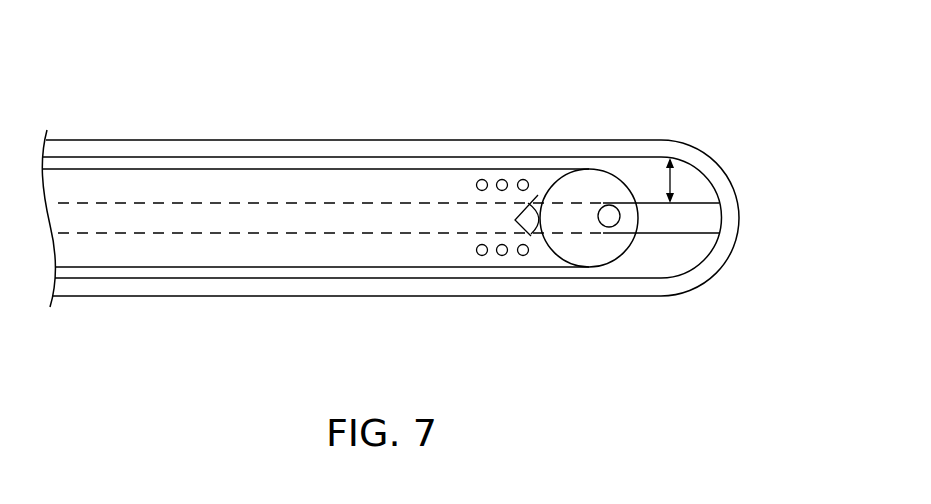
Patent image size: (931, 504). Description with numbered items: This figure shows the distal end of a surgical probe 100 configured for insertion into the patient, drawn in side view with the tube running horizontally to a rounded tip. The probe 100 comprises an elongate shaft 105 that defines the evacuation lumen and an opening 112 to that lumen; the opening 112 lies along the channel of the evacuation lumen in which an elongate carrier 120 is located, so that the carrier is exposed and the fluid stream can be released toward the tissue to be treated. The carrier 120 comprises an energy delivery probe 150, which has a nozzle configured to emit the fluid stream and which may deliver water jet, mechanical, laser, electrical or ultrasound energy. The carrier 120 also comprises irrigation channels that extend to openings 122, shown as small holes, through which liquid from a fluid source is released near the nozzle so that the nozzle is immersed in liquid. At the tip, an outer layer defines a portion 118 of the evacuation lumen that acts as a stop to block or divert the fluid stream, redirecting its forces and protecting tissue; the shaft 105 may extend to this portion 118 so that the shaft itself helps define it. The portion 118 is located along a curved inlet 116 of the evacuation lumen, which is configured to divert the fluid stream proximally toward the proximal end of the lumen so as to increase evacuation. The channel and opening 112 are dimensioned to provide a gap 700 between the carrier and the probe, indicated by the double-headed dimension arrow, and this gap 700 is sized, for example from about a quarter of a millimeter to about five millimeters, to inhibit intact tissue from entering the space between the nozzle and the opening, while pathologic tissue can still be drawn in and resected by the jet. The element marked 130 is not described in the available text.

The surgical probe 100 is at (327, 57).
The elongate shaft 105 is at (397, 140).
The opening 112 is at (697, 166).
The curved inlet 116 is at (697, 185).
The portion of the evacuation lumen 118 is at (705, 195).
The elongate carrier 120 is at (315, 248).
The openings 122 is at (475, 250).
The reflector element 130 is at (533, 238).
The energy delivery probe 150 is at (617, 220).
The gap 700 is at (666, 173).